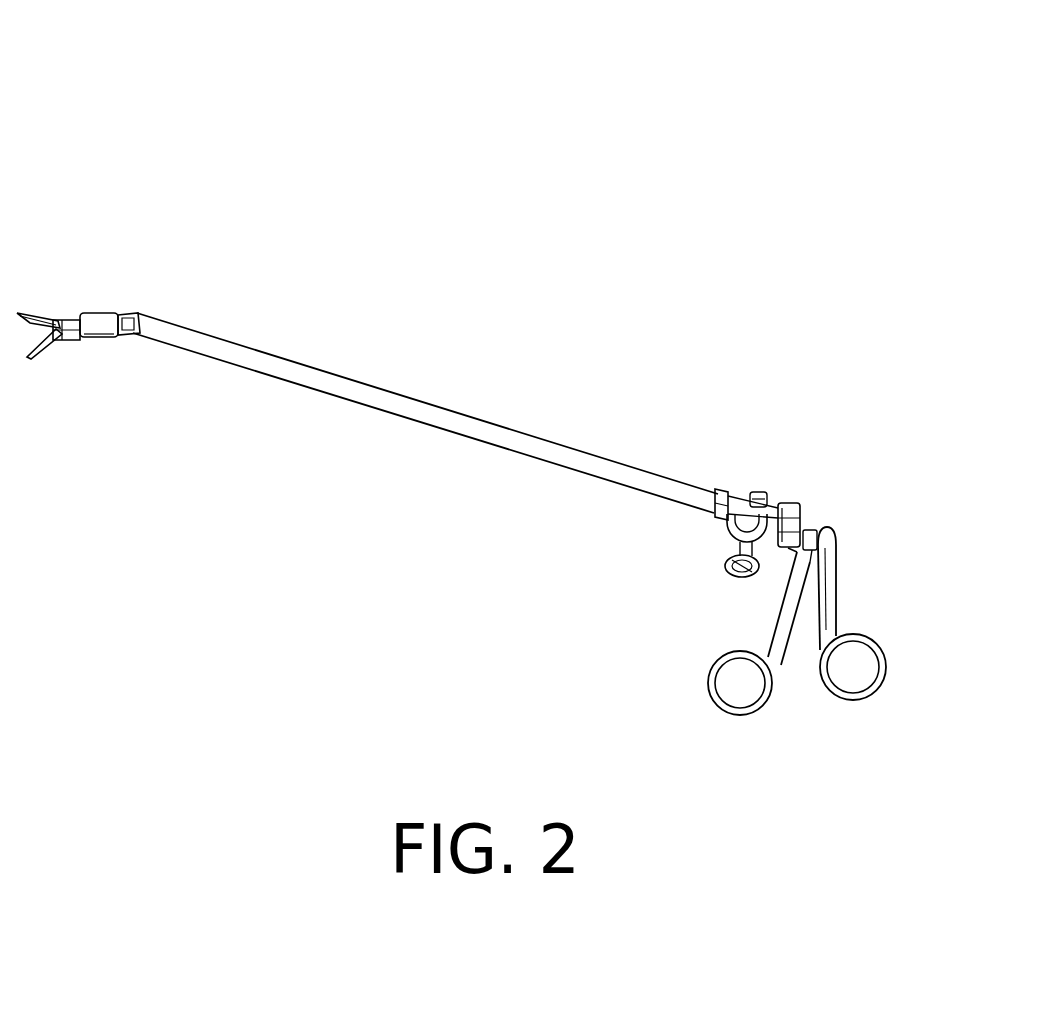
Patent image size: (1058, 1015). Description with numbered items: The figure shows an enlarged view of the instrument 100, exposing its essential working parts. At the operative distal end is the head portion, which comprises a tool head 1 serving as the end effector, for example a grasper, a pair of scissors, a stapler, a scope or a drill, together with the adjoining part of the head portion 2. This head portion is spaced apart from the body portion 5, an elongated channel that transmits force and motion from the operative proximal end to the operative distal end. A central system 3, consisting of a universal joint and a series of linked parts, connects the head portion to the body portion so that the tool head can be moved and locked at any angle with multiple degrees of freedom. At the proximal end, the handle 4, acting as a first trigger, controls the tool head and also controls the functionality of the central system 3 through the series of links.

The instrument 100 is at (771, 152).
The tool head 1 is at (57, 306).
The head portion 2 is at (99, 303).
The central system 3 is at (134, 306).
The handle 4 is at (782, 487).
The body portion 5 is at (512, 415).